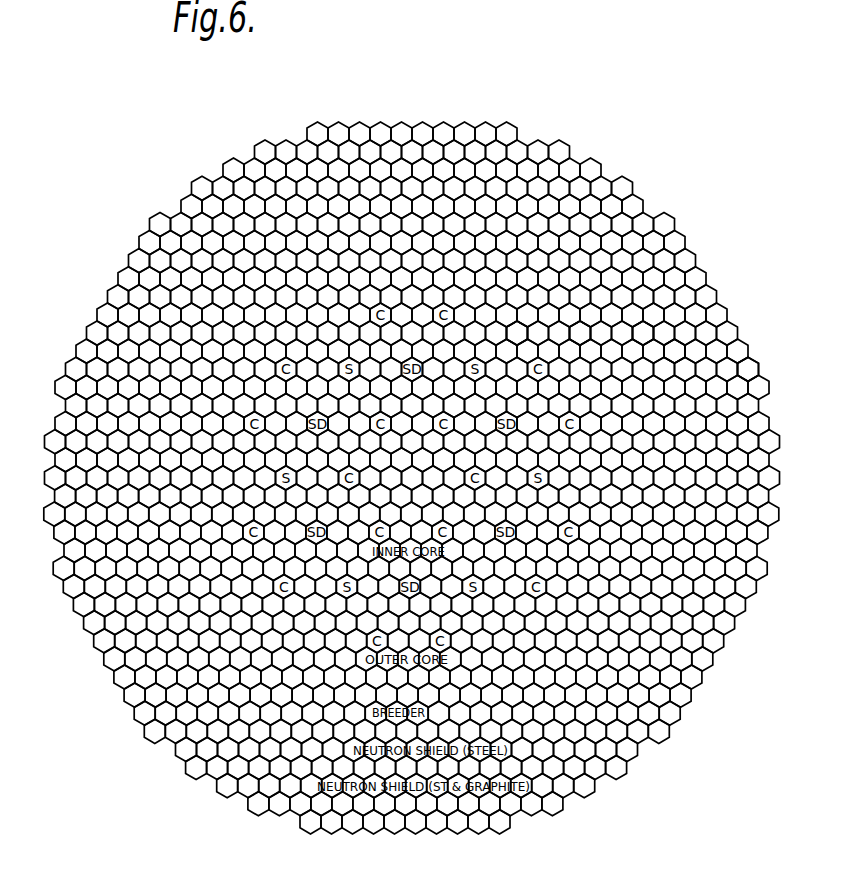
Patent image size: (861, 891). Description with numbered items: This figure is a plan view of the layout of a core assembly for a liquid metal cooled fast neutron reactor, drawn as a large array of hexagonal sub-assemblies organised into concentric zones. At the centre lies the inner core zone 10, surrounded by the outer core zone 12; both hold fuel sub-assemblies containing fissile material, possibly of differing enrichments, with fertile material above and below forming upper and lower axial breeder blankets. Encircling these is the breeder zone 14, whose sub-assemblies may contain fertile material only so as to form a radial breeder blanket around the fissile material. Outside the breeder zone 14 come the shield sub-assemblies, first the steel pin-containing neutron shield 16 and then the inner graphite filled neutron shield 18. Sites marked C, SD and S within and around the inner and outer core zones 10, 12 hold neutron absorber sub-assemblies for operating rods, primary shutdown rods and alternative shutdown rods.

The inner core zone 10 is at (512, 339).
The outer core zone 12 is at (575, 334).
The breeder zone 14 is at (639, 334).
The steel pin-containing neutron shield 16 is at (669, 356).
The inner graphite filled neutron shield 18 is at (765, 372).